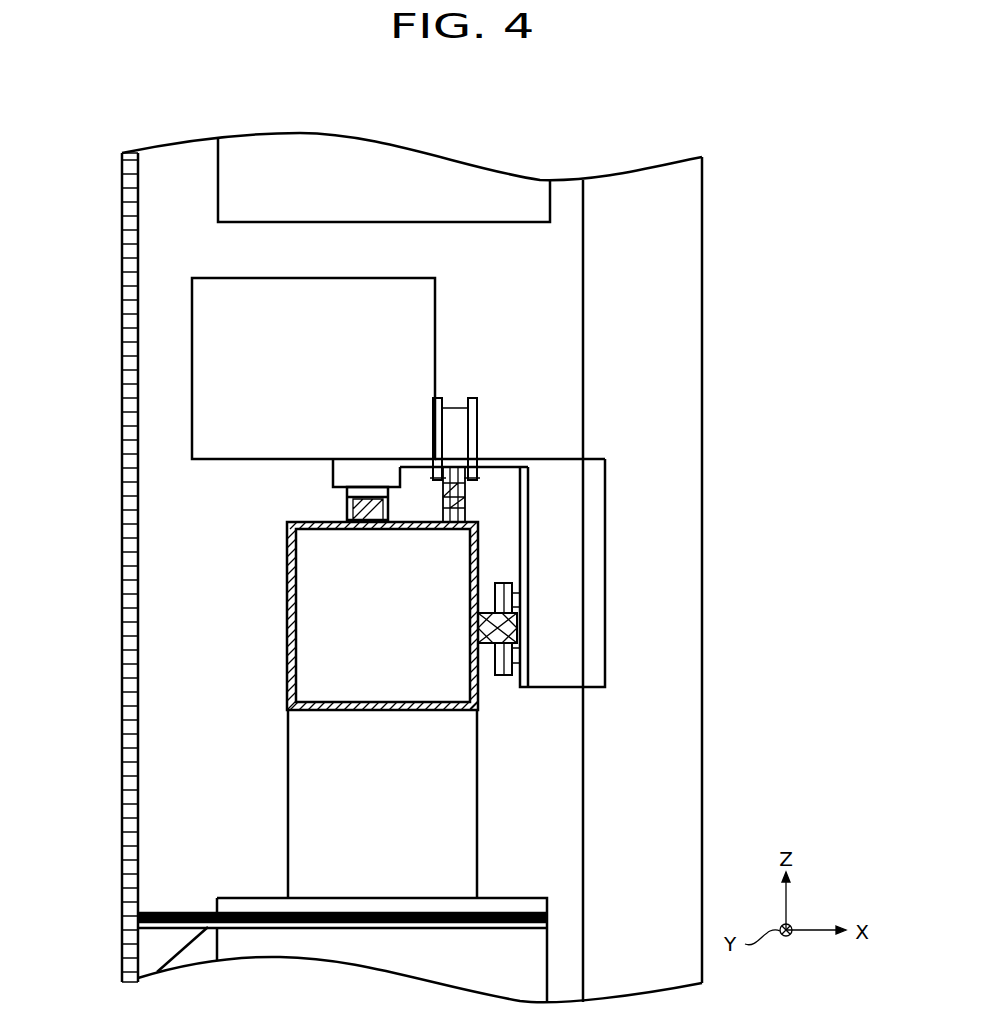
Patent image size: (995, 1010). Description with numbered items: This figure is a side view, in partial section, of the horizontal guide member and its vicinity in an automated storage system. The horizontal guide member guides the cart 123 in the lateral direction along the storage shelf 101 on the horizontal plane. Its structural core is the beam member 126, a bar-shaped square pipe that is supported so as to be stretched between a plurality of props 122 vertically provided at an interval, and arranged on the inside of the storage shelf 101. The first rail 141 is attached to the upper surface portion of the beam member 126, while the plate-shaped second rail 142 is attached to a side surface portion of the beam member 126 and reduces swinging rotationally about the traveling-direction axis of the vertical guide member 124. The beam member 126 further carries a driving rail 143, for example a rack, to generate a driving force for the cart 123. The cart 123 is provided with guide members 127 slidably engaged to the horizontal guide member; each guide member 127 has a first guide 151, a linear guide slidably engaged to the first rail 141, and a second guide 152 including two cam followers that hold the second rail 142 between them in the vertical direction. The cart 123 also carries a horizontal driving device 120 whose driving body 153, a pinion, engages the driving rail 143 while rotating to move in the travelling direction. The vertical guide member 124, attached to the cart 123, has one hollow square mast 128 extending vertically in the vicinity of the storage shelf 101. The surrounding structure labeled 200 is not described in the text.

The storage shelf 101 is at (487, 277).
The horizontal driving device 120 is at (188, 352).
The props 122 is at (315, 750).
The cart 123 is at (500, 459).
The vertical guide member 124 is at (703, 268).
The beam member 126 is at (287, 563).
The guide member 127 is at (528, 518).
The mast 128 is at (680, 363).
The first rail 141 is at (343, 503).
The second rail 142 is at (483, 648).
The driving rail 143 is at (430, 462).
The first guide 151 is at (343, 497).
The second guide 152 is at (515, 603).
The driving body 153 is at (457, 397).
The base plate 200 is at (259, 185).